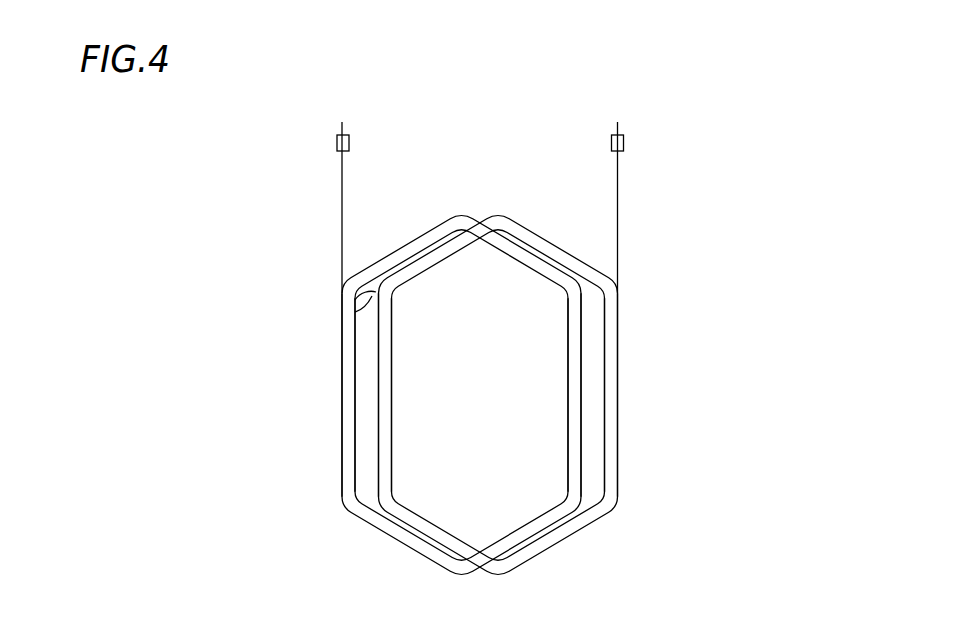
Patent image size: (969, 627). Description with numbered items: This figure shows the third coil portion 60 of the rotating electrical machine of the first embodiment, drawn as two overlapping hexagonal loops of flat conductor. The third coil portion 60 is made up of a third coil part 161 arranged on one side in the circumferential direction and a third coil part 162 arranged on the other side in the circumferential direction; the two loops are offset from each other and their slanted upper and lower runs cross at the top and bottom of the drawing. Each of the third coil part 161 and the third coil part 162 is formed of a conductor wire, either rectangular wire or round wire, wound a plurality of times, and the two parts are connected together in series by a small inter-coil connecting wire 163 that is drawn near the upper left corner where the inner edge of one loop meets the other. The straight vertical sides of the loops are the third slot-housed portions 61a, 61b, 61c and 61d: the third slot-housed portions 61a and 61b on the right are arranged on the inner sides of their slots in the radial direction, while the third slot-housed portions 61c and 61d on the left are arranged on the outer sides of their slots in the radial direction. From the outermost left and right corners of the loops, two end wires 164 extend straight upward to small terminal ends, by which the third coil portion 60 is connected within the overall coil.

The third coil portion 60 is at (679, 237).
The third coil part 161 is at (522, 226).
The third coil part 162 is at (440, 227).
The inter-coil connecting wire 163 is at (356, 307).
The end wires 164 is at (337, 142).
The third slot-housed portion 61a is at (610, 450).
The third slot-housed portion 61b is at (577, 482).
The third slot-housed portion 61c is at (385, 425).
The third slot-housed portion 61d is at (343, 446).